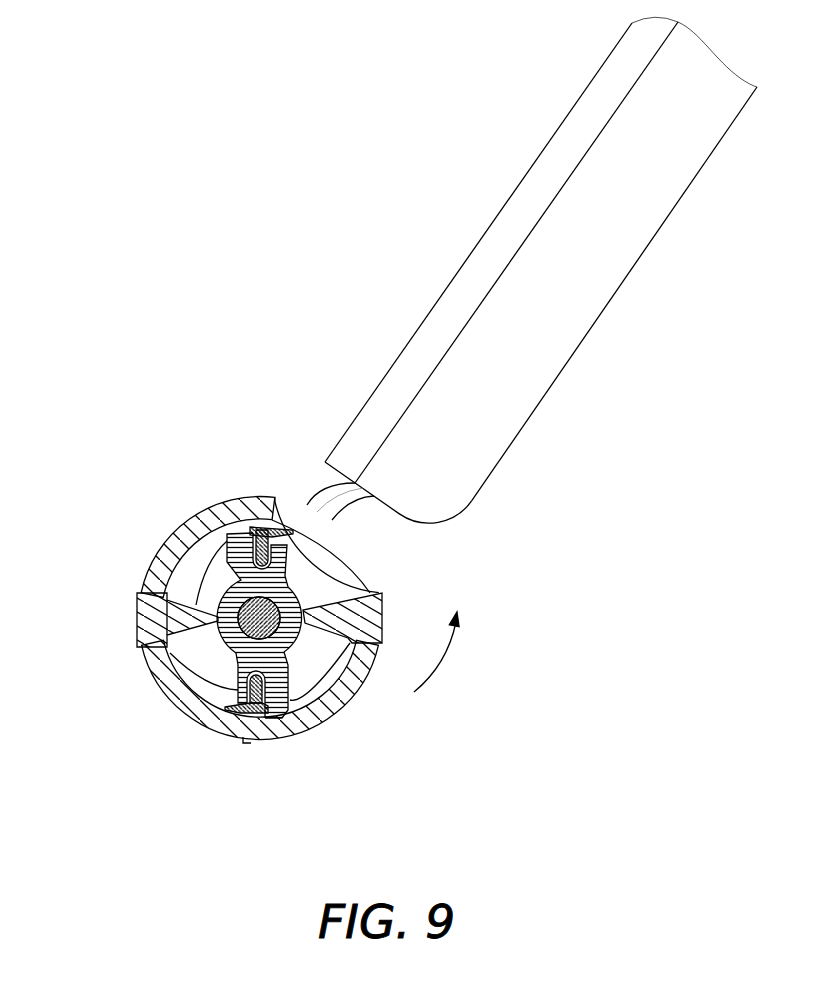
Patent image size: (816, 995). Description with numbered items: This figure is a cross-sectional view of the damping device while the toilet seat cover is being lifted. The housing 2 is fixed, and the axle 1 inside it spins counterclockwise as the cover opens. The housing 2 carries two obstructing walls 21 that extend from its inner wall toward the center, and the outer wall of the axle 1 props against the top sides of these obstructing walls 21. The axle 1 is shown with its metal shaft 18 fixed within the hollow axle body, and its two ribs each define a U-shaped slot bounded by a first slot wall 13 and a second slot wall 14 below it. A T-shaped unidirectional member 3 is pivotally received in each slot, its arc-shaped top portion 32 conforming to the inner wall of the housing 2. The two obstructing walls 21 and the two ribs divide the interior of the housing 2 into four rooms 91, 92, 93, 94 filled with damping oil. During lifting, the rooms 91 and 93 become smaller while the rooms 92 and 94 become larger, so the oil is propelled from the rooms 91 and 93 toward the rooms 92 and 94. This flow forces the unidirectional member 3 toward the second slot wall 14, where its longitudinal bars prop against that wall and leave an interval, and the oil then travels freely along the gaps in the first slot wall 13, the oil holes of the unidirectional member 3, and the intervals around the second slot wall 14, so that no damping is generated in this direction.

The axle 1 is at (353, 650).
The housing 2 is at (170, 567).
The unidirectional member 3 is at (252, 715).
The first slot wall 13 is at (277, 677).
The second slot wall 14 is at (242, 678).
The metal shaft 18 is at (247, 630).
The obstructing walls 21 is at (303, 617).
The top portion 32 is at (255, 528).
The room 91 is at (195, 593).
The room 92 is at (313, 570).
The room 93 is at (323, 650).
The room 94 is at (185, 648).